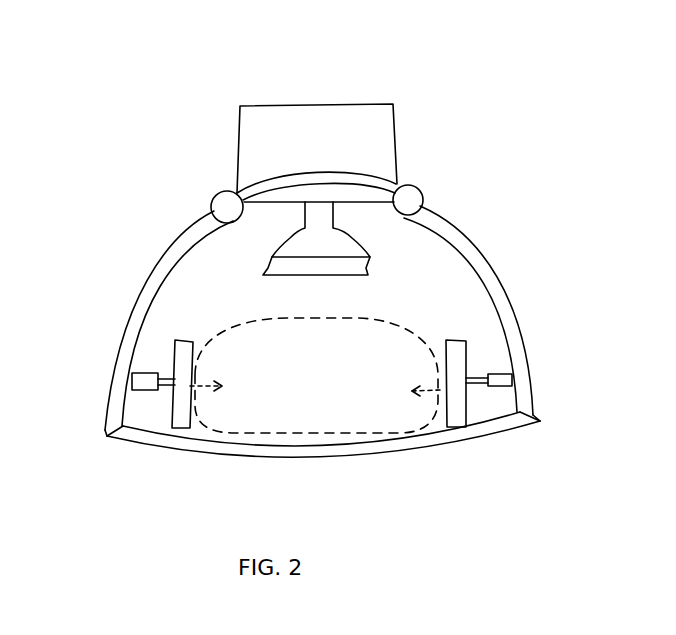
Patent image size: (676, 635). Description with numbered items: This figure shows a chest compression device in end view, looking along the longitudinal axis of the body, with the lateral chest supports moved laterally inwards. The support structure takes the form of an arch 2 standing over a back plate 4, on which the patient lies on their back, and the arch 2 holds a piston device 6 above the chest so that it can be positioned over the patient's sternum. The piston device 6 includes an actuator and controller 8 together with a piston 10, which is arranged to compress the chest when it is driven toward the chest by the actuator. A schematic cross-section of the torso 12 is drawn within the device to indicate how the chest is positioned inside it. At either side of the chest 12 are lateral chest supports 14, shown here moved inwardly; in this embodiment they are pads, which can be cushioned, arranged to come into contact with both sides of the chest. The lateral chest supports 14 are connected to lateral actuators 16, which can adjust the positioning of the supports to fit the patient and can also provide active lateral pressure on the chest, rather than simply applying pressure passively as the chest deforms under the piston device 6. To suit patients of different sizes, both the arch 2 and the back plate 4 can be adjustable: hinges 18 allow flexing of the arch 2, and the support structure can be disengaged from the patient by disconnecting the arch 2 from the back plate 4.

The arch 2 is at (470, 225).
The back plate 4 is at (233, 448).
The piston device 6 is at (415, 133).
The actuator and controller 8 is at (318, 130).
The piston 10 is at (292, 250).
The torso 12 is at (341, 437).
The lateral chest supports 14 is at (188, 356).
The lateral actuators 16 is at (150, 380).
The hinges 18 is at (226, 208).